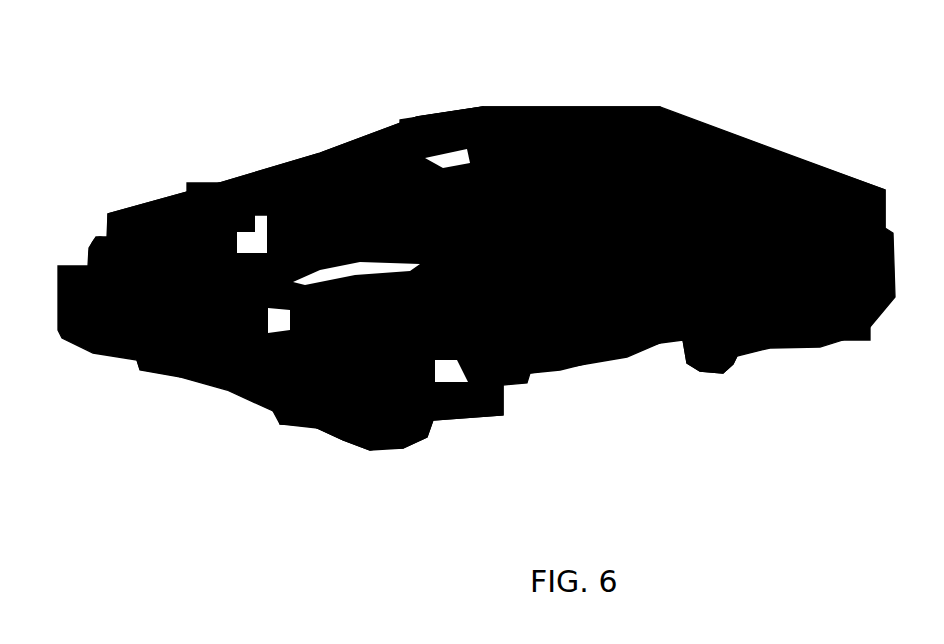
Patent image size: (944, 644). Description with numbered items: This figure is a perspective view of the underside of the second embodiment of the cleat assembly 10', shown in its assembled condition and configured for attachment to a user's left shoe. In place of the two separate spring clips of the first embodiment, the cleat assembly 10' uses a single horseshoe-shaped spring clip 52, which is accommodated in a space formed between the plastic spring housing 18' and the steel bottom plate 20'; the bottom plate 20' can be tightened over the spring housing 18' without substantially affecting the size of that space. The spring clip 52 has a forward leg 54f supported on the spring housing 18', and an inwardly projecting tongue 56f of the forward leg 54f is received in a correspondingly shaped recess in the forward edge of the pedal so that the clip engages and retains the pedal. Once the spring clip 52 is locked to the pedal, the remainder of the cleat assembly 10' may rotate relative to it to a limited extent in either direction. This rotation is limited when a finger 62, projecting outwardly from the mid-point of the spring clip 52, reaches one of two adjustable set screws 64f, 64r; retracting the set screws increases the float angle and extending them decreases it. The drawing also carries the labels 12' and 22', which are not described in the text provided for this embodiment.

The cleat assembly 10' is at (476, 331).
The rail 12' is at (384, 145).
The spring housing 18' is at (595, 389).
The bottom plate 20' is at (725, 395).
The wheel / roller 22' is at (494, 280).
The horseshoe-shaped spring clip 52 is at (433, 420).
The forward leg 54f is at (473, 413).
The inwardly projecting tongue 56f is at (345, 442).
The finger 62 is at (262, 215).
The forward set screw 64f is at (93, 240).
The rearward set screw 64r is at (418, 150).